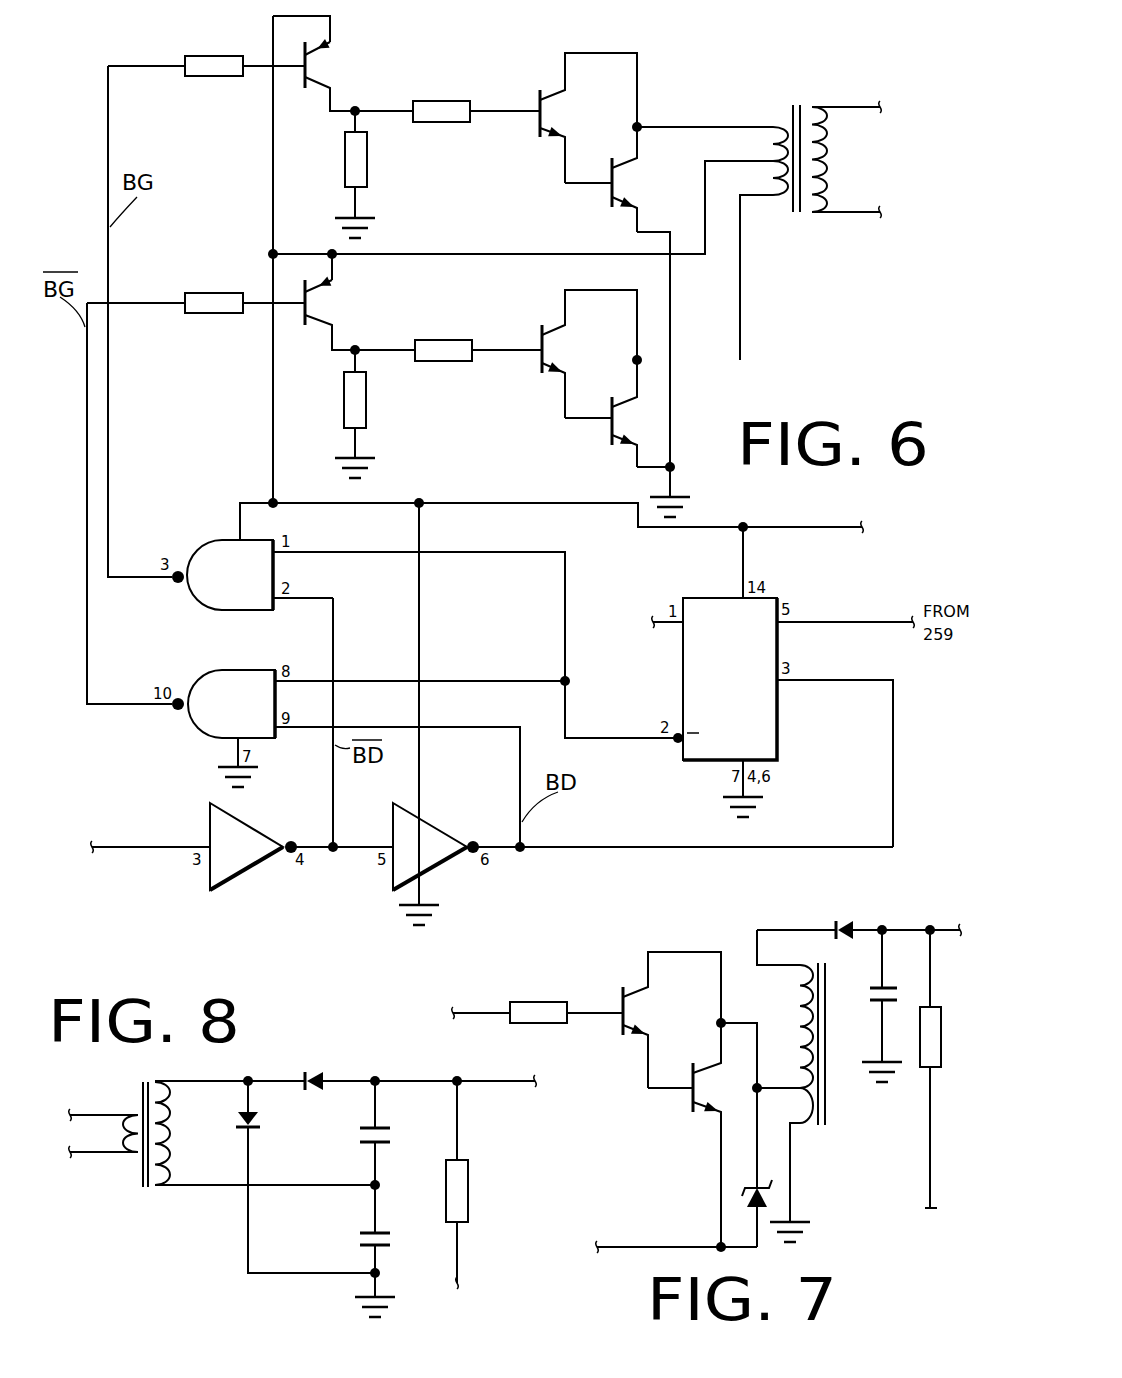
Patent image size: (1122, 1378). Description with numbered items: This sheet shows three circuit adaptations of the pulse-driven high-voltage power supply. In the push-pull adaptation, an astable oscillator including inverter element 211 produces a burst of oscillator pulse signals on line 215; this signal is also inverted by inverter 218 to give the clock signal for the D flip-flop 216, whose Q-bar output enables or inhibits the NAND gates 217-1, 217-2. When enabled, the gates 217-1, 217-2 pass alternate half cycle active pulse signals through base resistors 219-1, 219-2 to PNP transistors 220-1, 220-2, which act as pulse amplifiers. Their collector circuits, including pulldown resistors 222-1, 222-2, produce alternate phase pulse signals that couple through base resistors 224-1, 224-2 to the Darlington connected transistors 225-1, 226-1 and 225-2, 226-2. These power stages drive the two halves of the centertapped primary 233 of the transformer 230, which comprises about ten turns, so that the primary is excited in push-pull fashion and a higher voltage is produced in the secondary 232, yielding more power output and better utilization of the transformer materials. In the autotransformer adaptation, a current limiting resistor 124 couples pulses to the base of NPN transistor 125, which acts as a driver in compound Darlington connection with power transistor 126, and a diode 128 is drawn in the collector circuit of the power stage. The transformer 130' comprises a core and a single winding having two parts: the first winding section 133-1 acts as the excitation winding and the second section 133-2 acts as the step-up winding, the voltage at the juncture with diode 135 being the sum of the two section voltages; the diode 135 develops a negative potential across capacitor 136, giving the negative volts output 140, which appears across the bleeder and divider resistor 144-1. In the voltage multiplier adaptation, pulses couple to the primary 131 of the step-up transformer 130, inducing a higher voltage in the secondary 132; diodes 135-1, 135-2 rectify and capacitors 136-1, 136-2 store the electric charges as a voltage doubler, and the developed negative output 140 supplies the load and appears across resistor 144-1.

In FIG. 6, the base resistor 219-1 is at (215, 63).
In FIG. 6, the PNP transistor 220-1 is at (323, 62).
In FIG. 6, the pulldown resistor 222-1 is at (367, 160).
In FIG. 6, the base resistor 224-1 is at (438, 110).
In FIG. 6, the Darlington connected transistor 225-1 is at (537, 128).
In FIG. 6, the Darlington connected transistor 226-1 is at (610, 192).
In FIG. 6, the primary 233 is at (777, 140).
In FIG. 6, the transformer 230 is at (793, 108).
In FIG. 6, the secondary 232 is at (827, 173).
In FIG. 6, the base resistor 219-2 is at (207, 297).
In FIG. 6, the PNP transistor 220-2 is at (317, 315).
In FIG. 6, the pulldown resistor 222-2 is at (365, 393).
In FIG. 6, the base resistor 224-2 is at (465, 320).
In FIG. 6, the Darlington connected transistor 225-2 is at (543, 367).
In FIG. 6, the Darlington connected transistor 226-2 is at (610, 437).
In FIG. 6, the gate 217-1 is at (210, 552).
In FIG. 6, the gate 217-2 is at (207, 683).
In FIG. 6, the D flip-flop 216 is at (730, 613).
In FIG. 6, the inverter element 211 is at (223, 835).
In FIG. 6, the line 215 is at (333, 813).
In FIG. 6, the inverter 218 is at (410, 835).
In FIG. 7, the current limiting resistor 124 is at (530, 1008).
In FIG. 7, the NPN transistor 125 is at (623, 993).
In FIG. 7, the power transistor 126 is at (693, 1070).
In FIG. 7, the second winding section 133-2 is at (797, 1017).
In FIG. 7, the first winding section 133-1 is at (798, 1100).
In FIG. 7, the transformer 130' is at (859, 1049).
In FIG. 7, the diode 135 is at (848, 925).
In FIG. 7, the -volts output 140 is at (933, 925).
In FIG. 8, the -volts output 140 is at (497, 1085).
In FIG. 7, the resistor 144-1 is at (942, 1027).
In FIG. 8, the resistor 144-1 is at (460, 1200).
In FIG. 7, the capacitor 136 is at (878, 1002).
In FIG. 7, the zener diode 128 is at (752, 1188).
In FIG. 8, the primary 131 is at (113, 1113).
In FIG. 8, the secondary 132 is at (168, 1117).
In FIG. 8, the step-up transformer 130 is at (115, 1153).
In FIG. 8, the diode 135-1 is at (323, 1075).
In FIG. 8, the diode 135-2 is at (258, 1125).
In FIG. 8, the capacitor 136-1 is at (388, 1140).
In FIG. 8, the capacitor 136-2 is at (363, 1245).